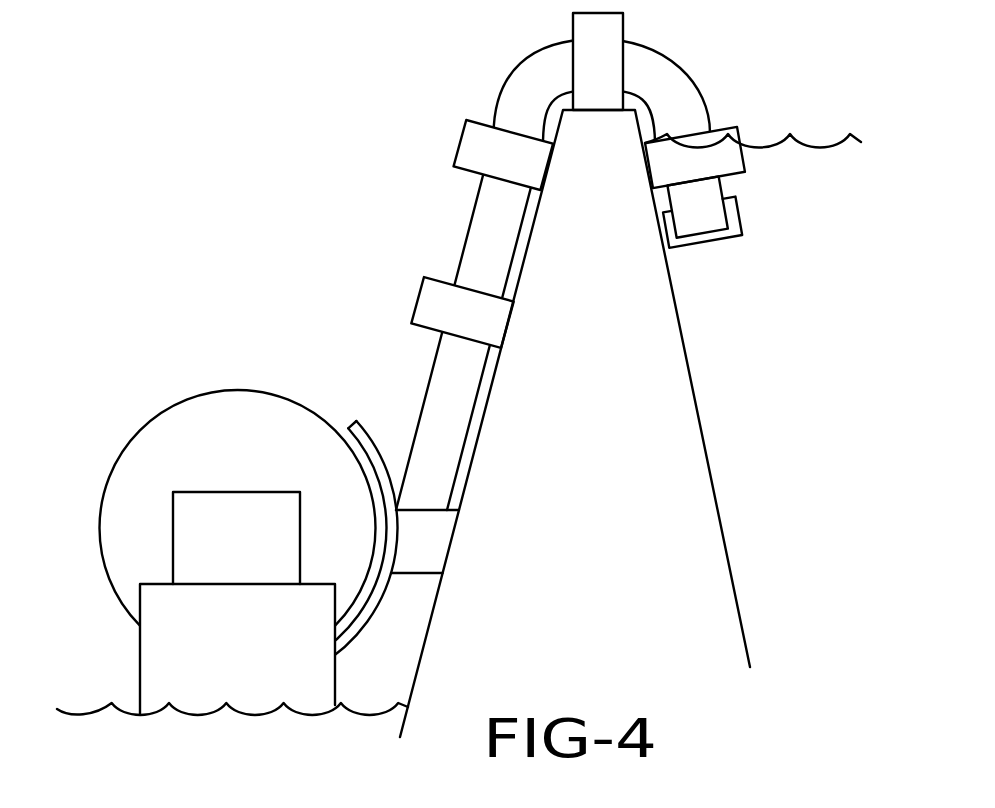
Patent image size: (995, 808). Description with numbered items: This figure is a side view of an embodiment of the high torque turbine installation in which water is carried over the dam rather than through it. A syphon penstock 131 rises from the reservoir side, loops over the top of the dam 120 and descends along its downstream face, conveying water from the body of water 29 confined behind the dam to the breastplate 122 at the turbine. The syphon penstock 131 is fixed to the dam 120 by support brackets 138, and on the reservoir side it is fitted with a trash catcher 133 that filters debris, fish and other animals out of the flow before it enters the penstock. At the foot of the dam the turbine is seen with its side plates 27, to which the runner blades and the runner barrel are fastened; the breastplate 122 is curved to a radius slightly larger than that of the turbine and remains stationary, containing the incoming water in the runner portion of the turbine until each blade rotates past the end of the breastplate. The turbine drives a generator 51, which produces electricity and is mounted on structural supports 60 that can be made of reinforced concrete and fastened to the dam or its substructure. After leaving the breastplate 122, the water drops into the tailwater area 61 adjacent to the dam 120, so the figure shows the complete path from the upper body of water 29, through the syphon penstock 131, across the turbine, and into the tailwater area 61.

The turbine side plates 27 is at (192, 396).
The body of water 29 is at (823, 334).
The generator 51 is at (223, 512).
The structural supports 60 is at (170, 670).
The tailwater area 61 is at (120, 764).
The dam 120 is at (617, 418).
The breastplate 122 is at (357, 423).
The syphon penstock 131 is at (517, 68).
The trash catcher 133 is at (741, 200).
The support brackets 138 is at (460, 158).